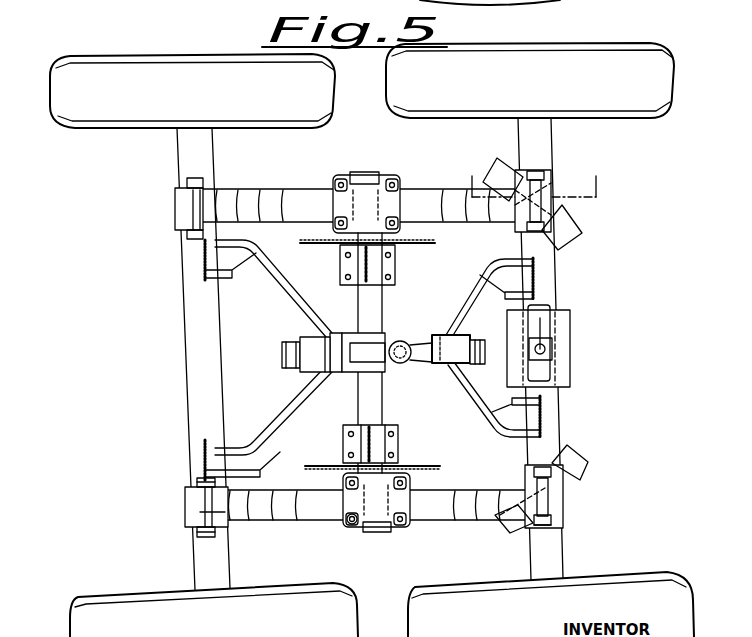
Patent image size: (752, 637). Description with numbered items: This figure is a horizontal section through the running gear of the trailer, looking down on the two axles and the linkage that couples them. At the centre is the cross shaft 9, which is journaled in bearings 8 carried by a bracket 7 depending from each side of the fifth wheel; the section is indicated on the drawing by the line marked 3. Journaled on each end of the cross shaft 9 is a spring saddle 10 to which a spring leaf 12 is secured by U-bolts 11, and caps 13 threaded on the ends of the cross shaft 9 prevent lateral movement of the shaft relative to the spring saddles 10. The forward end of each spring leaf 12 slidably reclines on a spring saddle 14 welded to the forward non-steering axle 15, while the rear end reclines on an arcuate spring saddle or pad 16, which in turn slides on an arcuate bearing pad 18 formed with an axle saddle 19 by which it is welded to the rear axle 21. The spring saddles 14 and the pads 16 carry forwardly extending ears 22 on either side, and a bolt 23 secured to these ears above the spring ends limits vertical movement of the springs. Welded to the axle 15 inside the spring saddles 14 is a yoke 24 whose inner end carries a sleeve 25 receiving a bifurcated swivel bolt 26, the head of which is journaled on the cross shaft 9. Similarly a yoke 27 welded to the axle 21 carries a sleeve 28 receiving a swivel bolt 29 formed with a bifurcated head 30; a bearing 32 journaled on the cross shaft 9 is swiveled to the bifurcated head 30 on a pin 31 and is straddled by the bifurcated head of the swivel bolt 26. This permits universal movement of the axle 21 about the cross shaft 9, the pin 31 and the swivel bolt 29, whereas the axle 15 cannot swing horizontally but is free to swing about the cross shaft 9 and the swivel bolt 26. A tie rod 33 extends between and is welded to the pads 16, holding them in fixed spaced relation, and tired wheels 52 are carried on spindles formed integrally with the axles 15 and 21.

The section line 3- 3 is at (532, 184).
The bracket 7 is at (424, 246).
The bearings 8 is at (340, 268).
The cross shaft 9 is at (382, 386).
The spring saddle 10 is at (400, 190).
The U-bolts 11 is at (349, 526).
The spring leaf 12 is at (292, 192).
The caps 13 is at (372, 172).
The spring saddle 14 is at (178, 222).
The forward non-steering axle 15 is at (186, 370).
The arcuate spring saddle or pad 16 is at (565, 496).
The arcuate bearing pad 18 is at (574, 223).
The axle saddle 19 is at (563, 517).
The axle 21 is at (550, 263).
The ears 22 is at (197, 482).
The bolt 23 is at (190, 205).
The yoke 24 is at (280, 316).
The sleeve 25 is at (318, 345).
The bifurcated swivel bolt 26 is at (283, 358).
The yoke 27 is at (480, 408).
The sleeve 28 is at (446, 338).
The swivel bolt 29 is at (479, 362).
The bifurcated head 30 is at (422, 362).
The pin 31 is at (406, 345).
The bearing 32 is at (368, 347).
The tie rod 33 is at (553, 312).
The tired wheels 52 is at (103, 122).